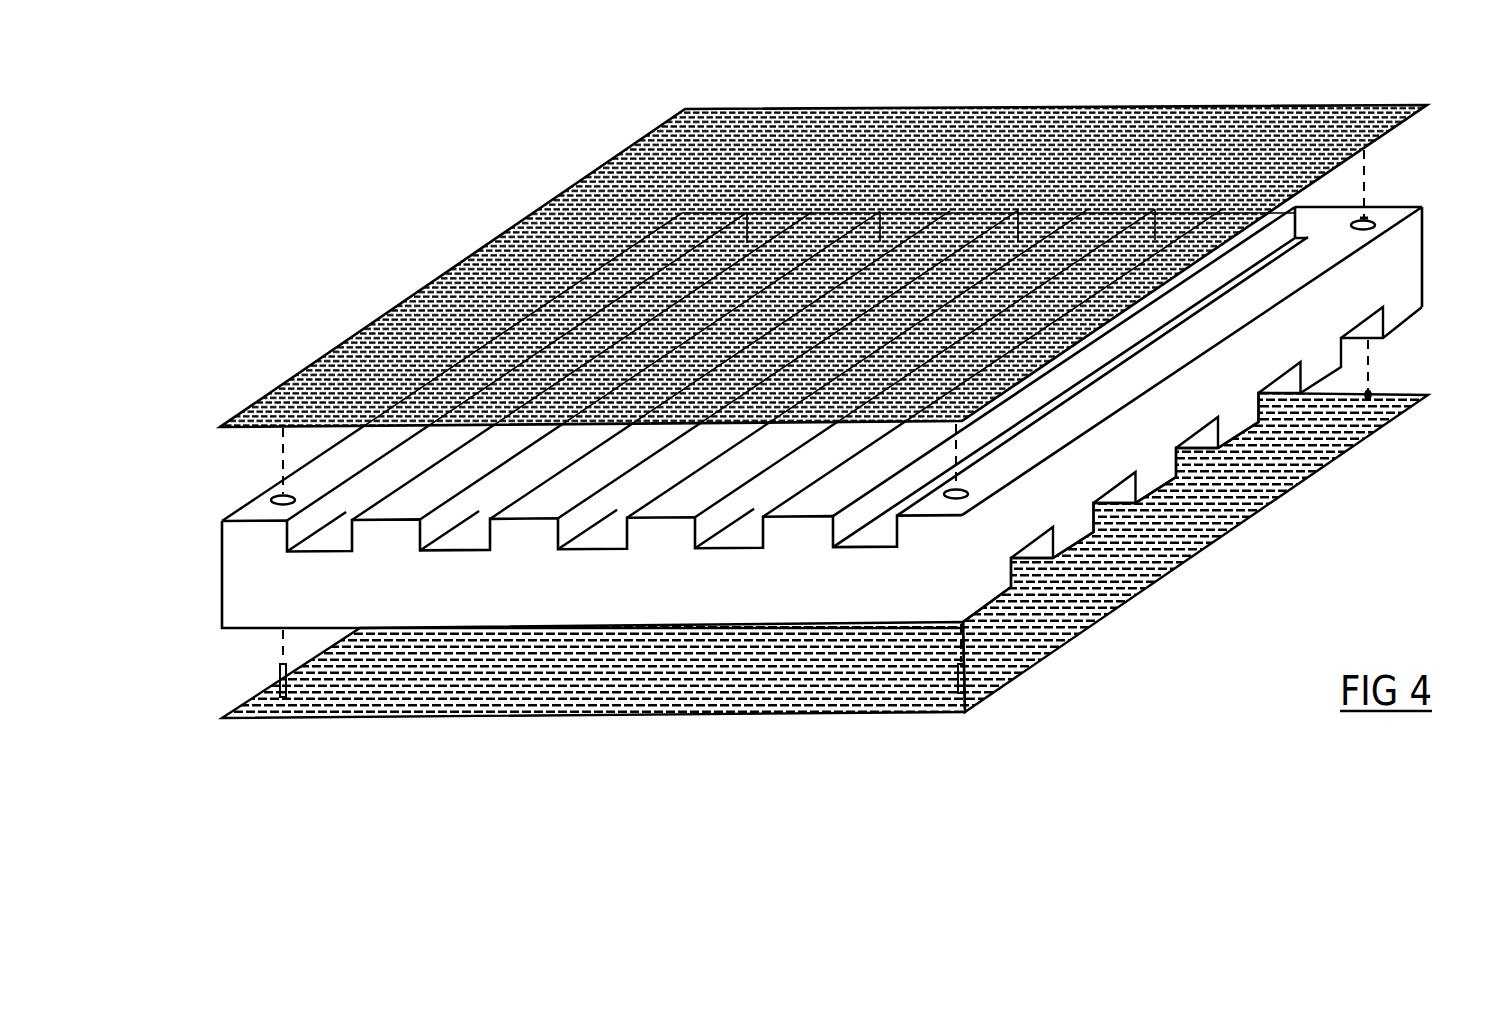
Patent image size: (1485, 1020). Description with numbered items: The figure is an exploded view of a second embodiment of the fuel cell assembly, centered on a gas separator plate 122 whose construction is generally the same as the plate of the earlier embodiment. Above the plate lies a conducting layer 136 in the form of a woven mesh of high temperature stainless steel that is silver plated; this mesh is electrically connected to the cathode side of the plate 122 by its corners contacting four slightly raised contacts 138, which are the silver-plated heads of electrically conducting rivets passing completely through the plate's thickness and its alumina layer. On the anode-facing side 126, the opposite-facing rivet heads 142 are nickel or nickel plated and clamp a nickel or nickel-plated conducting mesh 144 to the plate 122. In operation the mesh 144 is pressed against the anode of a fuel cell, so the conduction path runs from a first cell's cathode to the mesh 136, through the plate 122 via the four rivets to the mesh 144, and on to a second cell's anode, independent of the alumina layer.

The gas separator plate 122 is at (222, 572).
The anode-facing side 126 is at (490, 645).
The conducting layer 136 is at (1188, 107).
The contacts 138 is at (276, 497).
The rivet heads 142 is at (272, 688).
The conducting mesh 144 is at (1188, 563).